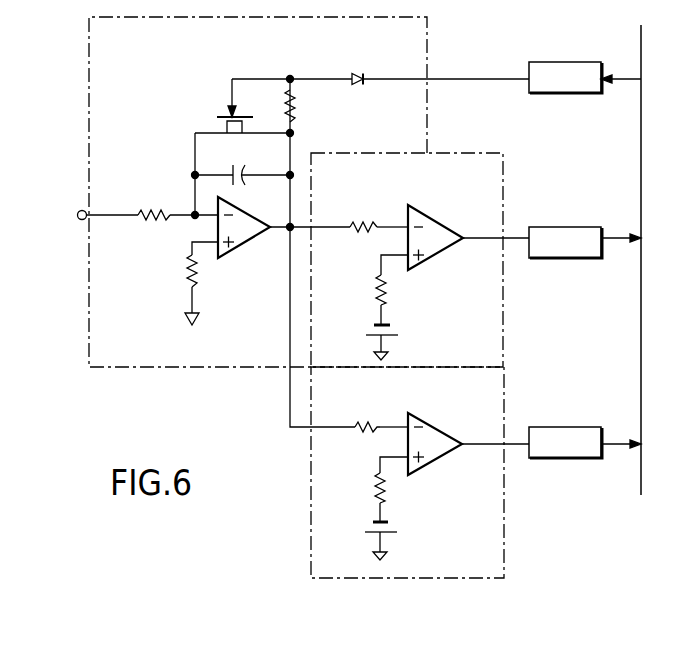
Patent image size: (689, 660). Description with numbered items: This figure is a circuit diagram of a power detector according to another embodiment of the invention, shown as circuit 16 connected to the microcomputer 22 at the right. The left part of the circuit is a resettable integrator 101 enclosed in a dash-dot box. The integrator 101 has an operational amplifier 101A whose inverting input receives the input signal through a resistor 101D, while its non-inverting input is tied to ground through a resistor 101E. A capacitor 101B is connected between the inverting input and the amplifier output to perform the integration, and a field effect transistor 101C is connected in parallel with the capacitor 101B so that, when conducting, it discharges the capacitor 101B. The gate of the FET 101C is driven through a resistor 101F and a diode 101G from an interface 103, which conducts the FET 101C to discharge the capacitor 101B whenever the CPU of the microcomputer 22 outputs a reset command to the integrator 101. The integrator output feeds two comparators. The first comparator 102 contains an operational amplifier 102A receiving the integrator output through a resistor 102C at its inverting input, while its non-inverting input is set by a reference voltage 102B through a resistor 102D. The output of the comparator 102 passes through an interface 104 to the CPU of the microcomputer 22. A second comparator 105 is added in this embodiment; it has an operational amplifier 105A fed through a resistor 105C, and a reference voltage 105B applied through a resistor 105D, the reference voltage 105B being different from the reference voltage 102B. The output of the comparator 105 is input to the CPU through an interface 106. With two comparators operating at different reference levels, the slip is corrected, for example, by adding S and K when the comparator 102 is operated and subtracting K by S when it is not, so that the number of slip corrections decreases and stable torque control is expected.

The detector circuit 16 is at (62, 34).
The microcomputer 22 is at (641, 58).
The resettable integrator 101 is at (89, 140).
The operational amplifier 101A is at (242, 250).
The capacitor 101B is at (251, 158).
The field effect transistor 101C is at (216, 125).
The resistor 101D is at (150, 212).
The resistor 101E is at (188, 272).
The resistor 101F is at (300, 105).
The diode 101G is at (376, 61).
The comparator 102 is at (502, 121).
The operational amplifier 102A is at (444, 252).
The reference voltage 102B is at (400, 328).
The resistor 102C is at (369, 225).
The resistor 102D is at (378, 302).
The interface 103 is at (557, 62).
The interface 104 is at (569, 227).
The comparator 105 is at (458, 580).
The operational amplifier 105A is at (442, 462).
The reference voltage 105B is at (399, 524).
The resistor 105C is at (360, 425).
The resistor 105D is at (378, 500).
The interface 106 is at (573, 427).